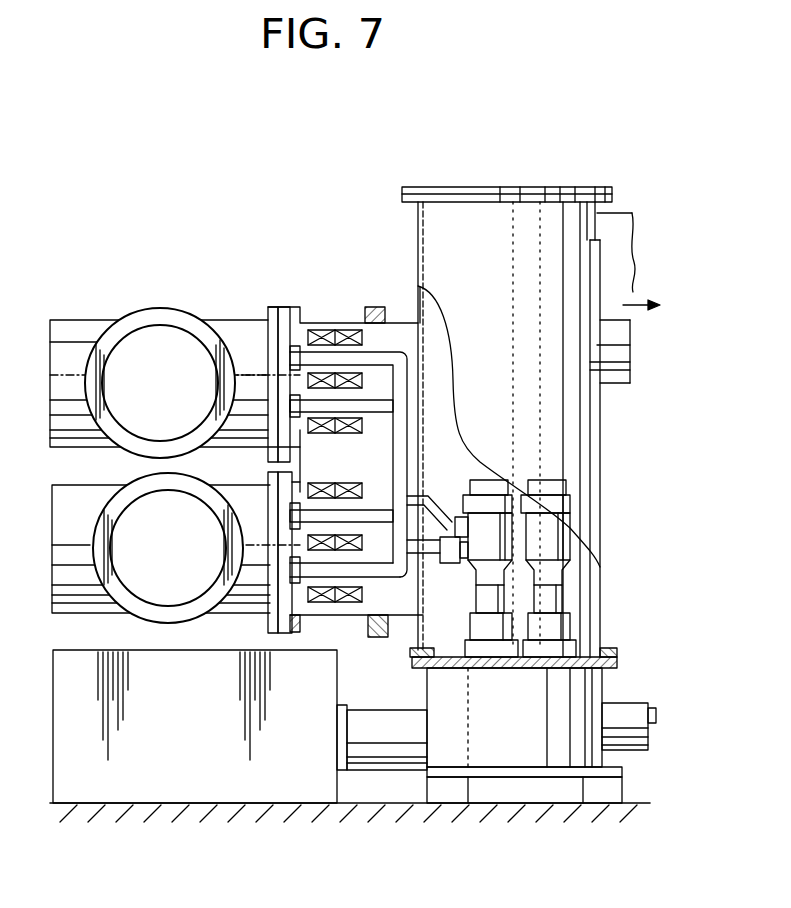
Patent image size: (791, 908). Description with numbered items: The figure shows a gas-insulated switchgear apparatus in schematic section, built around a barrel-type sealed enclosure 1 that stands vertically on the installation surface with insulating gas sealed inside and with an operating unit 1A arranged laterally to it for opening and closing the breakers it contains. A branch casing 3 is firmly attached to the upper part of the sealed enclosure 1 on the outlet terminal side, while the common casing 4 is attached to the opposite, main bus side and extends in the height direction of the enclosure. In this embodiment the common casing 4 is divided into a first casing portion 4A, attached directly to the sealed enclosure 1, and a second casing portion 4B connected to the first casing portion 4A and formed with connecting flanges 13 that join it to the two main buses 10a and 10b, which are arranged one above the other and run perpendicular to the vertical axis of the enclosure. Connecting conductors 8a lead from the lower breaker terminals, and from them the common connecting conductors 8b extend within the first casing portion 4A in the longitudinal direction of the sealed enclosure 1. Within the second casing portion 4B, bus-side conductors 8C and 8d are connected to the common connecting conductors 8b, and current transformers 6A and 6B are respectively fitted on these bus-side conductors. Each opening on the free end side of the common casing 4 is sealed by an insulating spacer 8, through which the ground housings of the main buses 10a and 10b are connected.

The sealed enclosure 1 is at (600, 508).
The operating unit 1A is at (212, 790).
The branch casing 3 is at (617, 213).
The common casing 4 is at (360, 620).
The first casing portion 4A is at (400, 322).
The second casing portion 4B is at (338, 322).
The current transformer 6A is at (320, 329).
The current transformer 6B is at (350, 585).
The insulating spacer 8 is at (276, 306).
The connecting conductor 8a is at (432, 500).
The common connecting conductor 8b is at (410, 423).
The bus-side conductor 8C is at (346, 351).
The bus-side conductor 8d is at (322, 578).
The main bus 10a is at (135, 342).
The main bus 10b is at (133, 508).
The connecting flange 13 is at (290, 306).